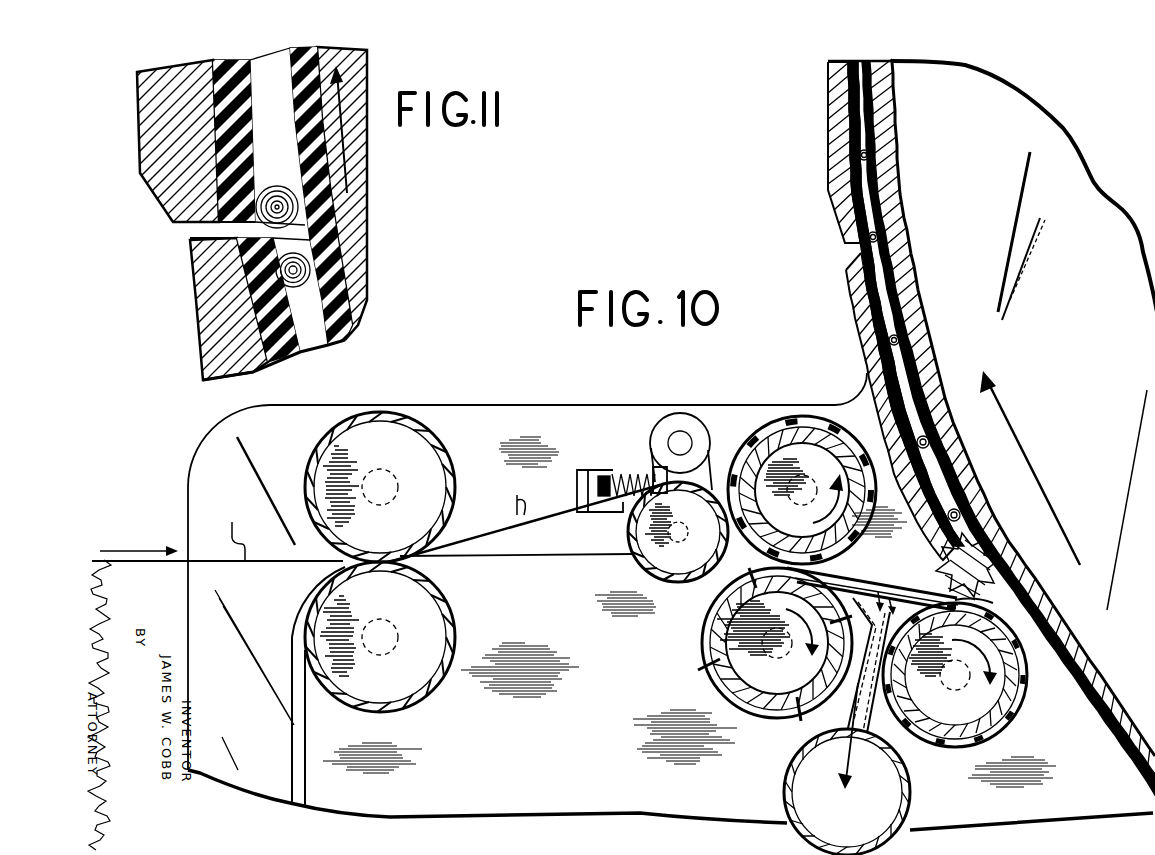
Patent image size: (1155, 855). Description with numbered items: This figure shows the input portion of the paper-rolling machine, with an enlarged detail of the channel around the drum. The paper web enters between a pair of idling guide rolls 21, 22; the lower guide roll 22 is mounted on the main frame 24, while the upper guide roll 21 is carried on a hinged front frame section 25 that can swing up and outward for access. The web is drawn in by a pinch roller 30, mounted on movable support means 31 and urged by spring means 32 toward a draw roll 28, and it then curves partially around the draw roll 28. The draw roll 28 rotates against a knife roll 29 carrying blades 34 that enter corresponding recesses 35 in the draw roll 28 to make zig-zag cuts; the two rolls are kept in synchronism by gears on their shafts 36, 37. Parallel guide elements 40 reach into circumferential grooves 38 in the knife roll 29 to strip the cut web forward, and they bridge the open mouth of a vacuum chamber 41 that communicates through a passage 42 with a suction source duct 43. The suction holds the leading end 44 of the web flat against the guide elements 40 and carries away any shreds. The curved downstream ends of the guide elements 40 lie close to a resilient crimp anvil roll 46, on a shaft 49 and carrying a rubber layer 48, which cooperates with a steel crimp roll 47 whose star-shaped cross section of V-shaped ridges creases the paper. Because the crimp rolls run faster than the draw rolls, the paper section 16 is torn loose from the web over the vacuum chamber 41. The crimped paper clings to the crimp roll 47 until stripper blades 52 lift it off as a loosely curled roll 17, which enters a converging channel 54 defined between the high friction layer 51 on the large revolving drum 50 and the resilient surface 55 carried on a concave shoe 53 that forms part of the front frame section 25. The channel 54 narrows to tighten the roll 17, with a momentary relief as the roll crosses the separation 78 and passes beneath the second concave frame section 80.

In FIG. 10, the paper section 16 is at (950, 582).
In FIG. 11, the loosely curled roll 17 is at (277, 186).
In FIG. 10, the loosely curled roll 17 is at (926, 428).
In FIG. 10, the upper guide roll 21 is at (400, 410).
In FIG. 10, the lower guide roll 22 is at (447, 623).
In FIG. 10, the main frame 24 is at (565, 765).
In FIG. 10, the front frame section 25 is at (546, 428).
In FIG. 10, the draw roll 28 is at (807, 423).
In FIG. 10, the knife roll 29 is at (718, 638).
In FIG. 10, the pinch roller 30 is at (642, 567).
In FIG. 10, the movable support means 31 is at (667, 427).
In FIG. 10, the spring means 32 is at (632, 473).
In FIG. 10, the blades 34 is at (703, 665).
In FIG. 10, the recesses 35 is at (740, 452).
In FIG. 10, the shaft 36 is at (815, 486).
In FIG. 10, the shaft 37 is at (768, 643).
In FIG. 10, the circumferential grooves 38 is at (743, 703).
In FIG. 10, the guide elements 40 is at (858, 580).
In FIG. 10, the vacuum chamber 41 is at (955, 675).
In FIG. 10, the passage 42 is at (877, 673).
In FIG. 10, the suction source duct 43 is at (853, 817).
In FIG. 10, the leading end of the web 44 is at (892, 590).
In FIG. 10, the crimp anvil roll 46 is at (1010, 723).
In FIG. 10, the crimp roll 47 is at (993, 593).
In FIG. 10, the rubber layer 48 is at (1023, 680).
In FIG. 10, the shaft 49 is at (962, 688).
In FIG. 11, the revolving drum 50 is at (352, 170).
In FIG. 10, the revolving drum 50 is at (1085, 405).
In FIG. 11, the high friction layer 51 is at (323, 235).
In FIG. 10, the high friction layer 51 is at (898, 317).
In FIG. 10, the stripper blades 52 is at (980, 530).
In FIG. 11, the concave shoe 53 is at (230, 310).
In FIG. 10, the concave shoe 53 is at (860, 297).
In FIG. 11, the converging channel 54 is at (310, 330).
In FIG. 10, the converging channel 54 is at (940, 483).
In FIG. 11, the resilient surface 55 is at (237, 62).
In FIG. 10, the resilient surface 55 is at (877, 327).
In FIG. 11, the separation 78 is at (190, 232).
In FIG. 11, the second concave frame section 80 is at (157, 115).
In FIG. 10, the second concave frame section 80 is at (842, 150).